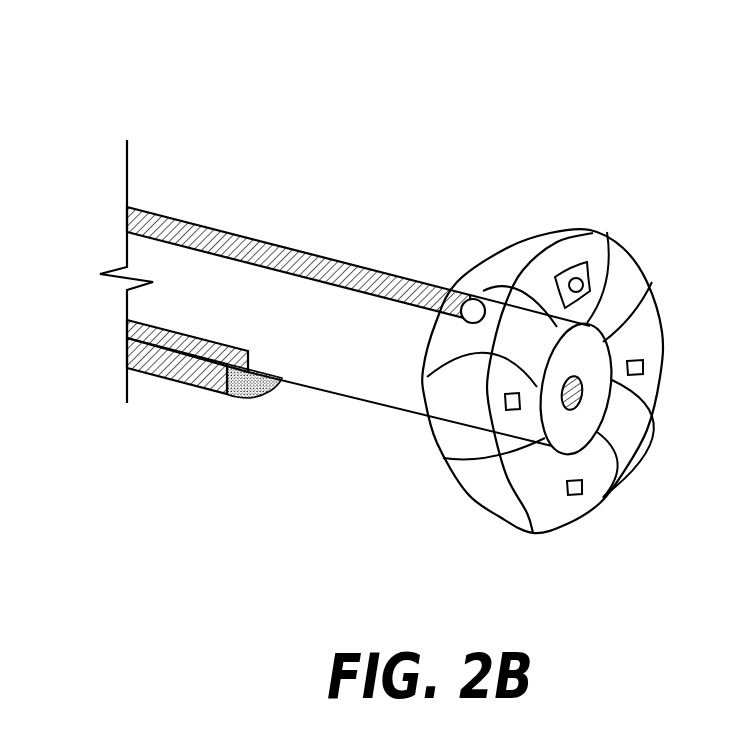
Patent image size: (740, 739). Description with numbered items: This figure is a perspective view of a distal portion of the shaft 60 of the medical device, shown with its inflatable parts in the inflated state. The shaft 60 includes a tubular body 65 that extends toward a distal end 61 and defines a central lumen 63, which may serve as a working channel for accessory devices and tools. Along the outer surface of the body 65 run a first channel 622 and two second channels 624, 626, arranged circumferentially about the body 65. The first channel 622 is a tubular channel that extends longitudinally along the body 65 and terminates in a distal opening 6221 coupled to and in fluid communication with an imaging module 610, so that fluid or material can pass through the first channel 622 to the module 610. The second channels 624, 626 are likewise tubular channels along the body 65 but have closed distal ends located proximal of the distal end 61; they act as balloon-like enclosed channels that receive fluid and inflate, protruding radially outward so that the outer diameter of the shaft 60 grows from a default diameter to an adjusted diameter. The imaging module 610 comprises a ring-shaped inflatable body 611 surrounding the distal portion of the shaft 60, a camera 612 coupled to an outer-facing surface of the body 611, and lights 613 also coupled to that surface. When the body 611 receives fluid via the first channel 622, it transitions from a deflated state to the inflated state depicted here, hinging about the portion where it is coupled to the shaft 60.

The shaft 60 is at (372, 258).
The distal end 61 is at (588, 358).
The central lumen 63 is at (571, 407).
The tubular body 65 is at (353, 383).
The imaging module 610 is at (603, 224).
The inflatable body 611 is at (520, 497).
The camera 612 is at (581, 267).
The lights 613 is at (503, 402).
The first channel 622 is at (240, 237).
The distal opening 6221 is at (480, 304).
The second channel 624 is at (182, 382).
The second channel 626 is at (272, 396).